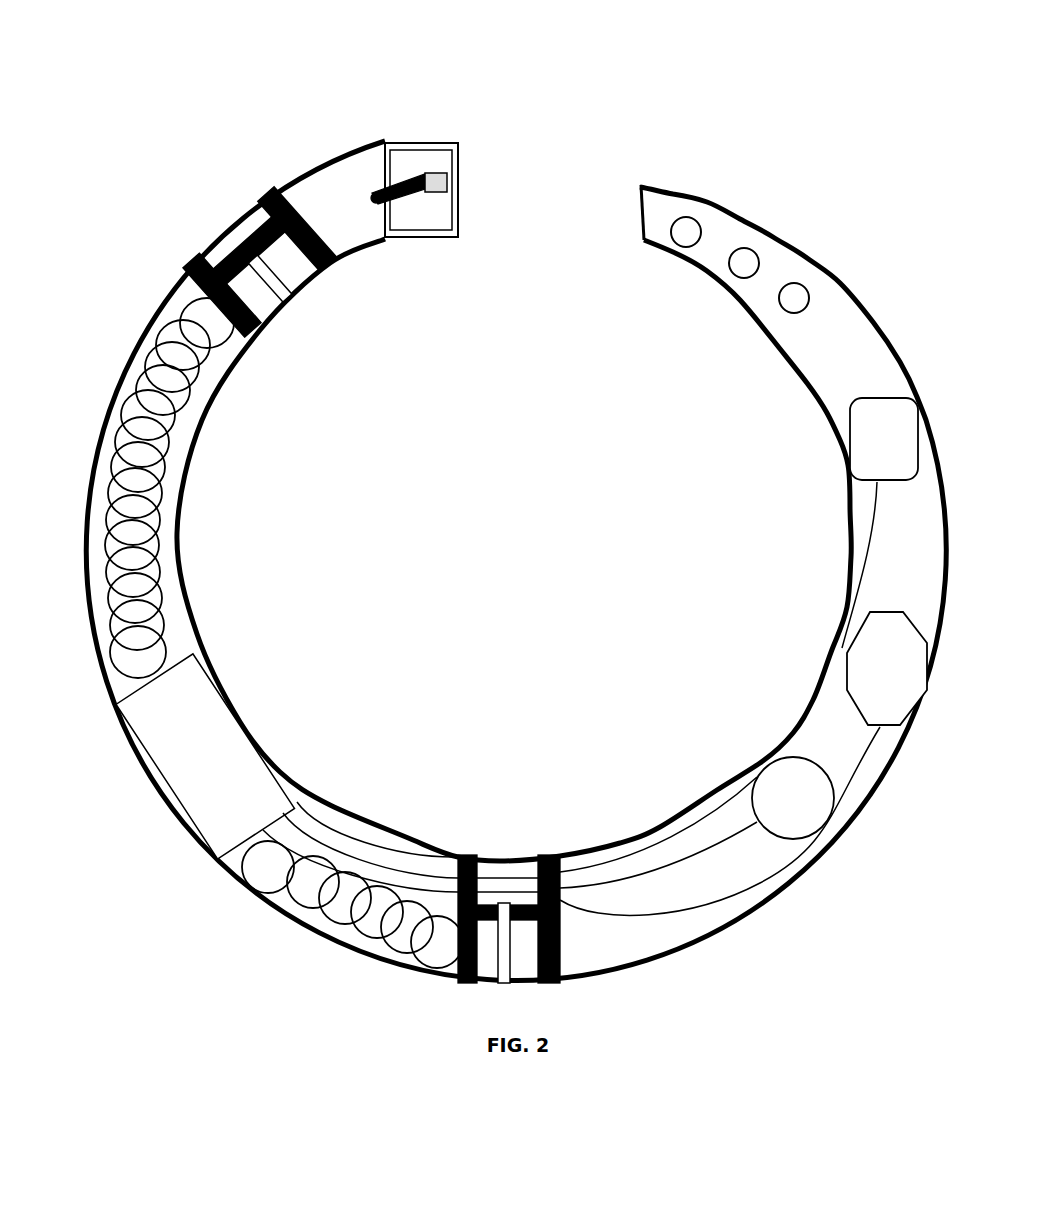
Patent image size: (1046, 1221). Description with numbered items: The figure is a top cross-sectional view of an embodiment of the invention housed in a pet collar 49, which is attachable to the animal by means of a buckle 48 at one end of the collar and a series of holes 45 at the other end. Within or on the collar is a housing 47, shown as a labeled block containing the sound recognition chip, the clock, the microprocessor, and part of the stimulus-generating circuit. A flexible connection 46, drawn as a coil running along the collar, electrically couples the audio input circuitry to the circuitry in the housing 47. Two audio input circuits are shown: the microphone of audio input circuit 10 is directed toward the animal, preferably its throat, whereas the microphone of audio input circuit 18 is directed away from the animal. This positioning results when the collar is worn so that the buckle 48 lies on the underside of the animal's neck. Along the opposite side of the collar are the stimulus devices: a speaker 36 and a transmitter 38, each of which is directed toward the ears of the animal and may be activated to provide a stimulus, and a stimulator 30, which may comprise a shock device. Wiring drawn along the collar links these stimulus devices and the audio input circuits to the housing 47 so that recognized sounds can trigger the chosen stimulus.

The audio input circuit 10 is at (254, 263).
The audio input circuit 18 is at (505, 905).
The stimulator 30 is at (850, 440).
The speaker 36 is at (760, 792).
The transmitter 38 is at (846, 680).
The holes 45 is at (670, 226).
The flexible connection 46 is at (171, 433).
The housing 47 is at (274, 770).
The buckle 48 is at (420, 143).
The collar 49 is at (828, 233).